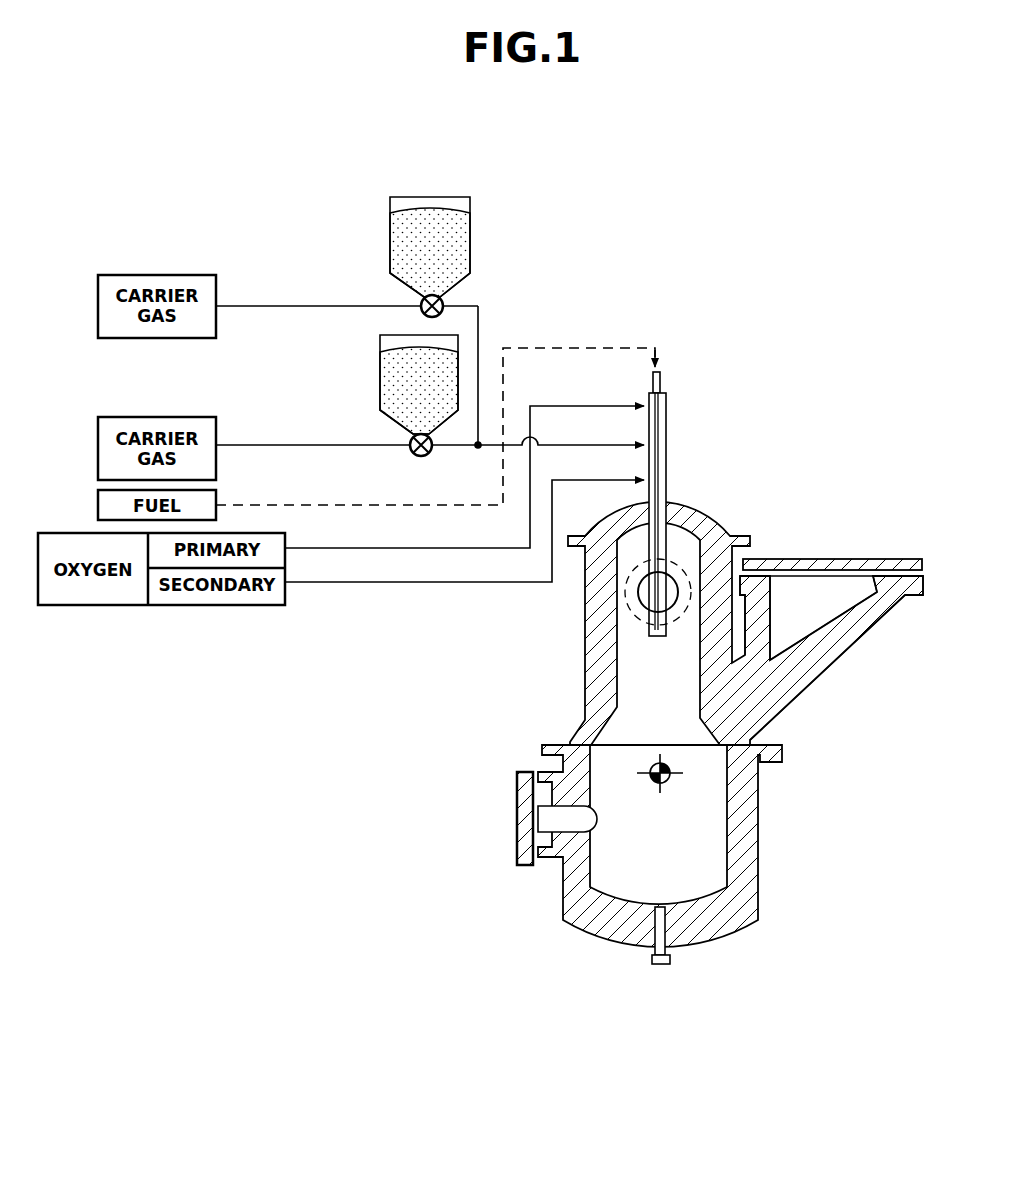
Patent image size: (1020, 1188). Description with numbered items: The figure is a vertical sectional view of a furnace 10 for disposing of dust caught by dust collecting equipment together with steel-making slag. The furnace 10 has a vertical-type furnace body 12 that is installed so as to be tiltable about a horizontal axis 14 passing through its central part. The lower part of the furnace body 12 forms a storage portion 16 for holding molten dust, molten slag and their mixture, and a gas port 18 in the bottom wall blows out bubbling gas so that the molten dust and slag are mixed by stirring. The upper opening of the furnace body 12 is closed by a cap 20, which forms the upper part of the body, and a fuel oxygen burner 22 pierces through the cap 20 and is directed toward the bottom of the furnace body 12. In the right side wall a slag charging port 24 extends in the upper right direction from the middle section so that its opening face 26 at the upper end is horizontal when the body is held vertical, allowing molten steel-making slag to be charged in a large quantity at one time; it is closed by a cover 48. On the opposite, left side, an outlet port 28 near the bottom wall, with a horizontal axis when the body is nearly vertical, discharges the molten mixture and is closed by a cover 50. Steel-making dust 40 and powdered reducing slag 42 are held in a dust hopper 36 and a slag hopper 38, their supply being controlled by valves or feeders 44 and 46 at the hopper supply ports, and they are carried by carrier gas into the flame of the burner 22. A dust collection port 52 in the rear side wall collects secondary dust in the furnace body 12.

The furnace 10 is at (736, 356).
The furnace body 12 is at (772, 836).
The horizontal axis 14 is at (672, 768).
The storage portion 16 is at (712, 881).
The gas port 18 is at (668, 941).
The cap 20 is at (705, 522).
The fuel oxygen burner 22 is at (662, 414).
The slag charging port 24 is at (785, 660).
The opening face 26 is at (855, 585).
The outlet port 28 is at (557, 816).
The dust hopper 36 is at (388, 348).
The slag hopper 38 is at (398, 212).
The steel-making dust 40 is at (388, 389).
The powdered reducing slag 42 is at (460, 241).
The valve or feeder 44 is at (421, 303).
The valve or feeder 46 is at (411, 452).
The cover 48 is at (790, 559).
The cover 50 is at (517, 800).
The dust collection port 52 is at (640, 591).